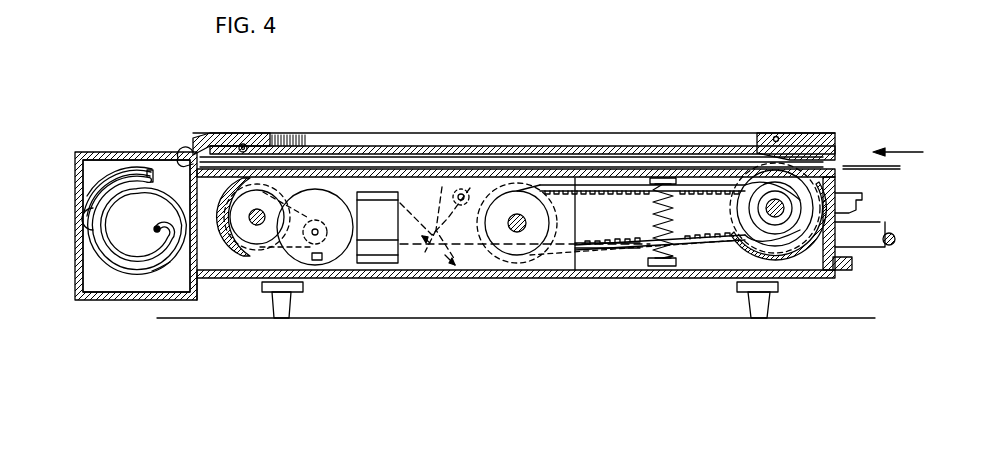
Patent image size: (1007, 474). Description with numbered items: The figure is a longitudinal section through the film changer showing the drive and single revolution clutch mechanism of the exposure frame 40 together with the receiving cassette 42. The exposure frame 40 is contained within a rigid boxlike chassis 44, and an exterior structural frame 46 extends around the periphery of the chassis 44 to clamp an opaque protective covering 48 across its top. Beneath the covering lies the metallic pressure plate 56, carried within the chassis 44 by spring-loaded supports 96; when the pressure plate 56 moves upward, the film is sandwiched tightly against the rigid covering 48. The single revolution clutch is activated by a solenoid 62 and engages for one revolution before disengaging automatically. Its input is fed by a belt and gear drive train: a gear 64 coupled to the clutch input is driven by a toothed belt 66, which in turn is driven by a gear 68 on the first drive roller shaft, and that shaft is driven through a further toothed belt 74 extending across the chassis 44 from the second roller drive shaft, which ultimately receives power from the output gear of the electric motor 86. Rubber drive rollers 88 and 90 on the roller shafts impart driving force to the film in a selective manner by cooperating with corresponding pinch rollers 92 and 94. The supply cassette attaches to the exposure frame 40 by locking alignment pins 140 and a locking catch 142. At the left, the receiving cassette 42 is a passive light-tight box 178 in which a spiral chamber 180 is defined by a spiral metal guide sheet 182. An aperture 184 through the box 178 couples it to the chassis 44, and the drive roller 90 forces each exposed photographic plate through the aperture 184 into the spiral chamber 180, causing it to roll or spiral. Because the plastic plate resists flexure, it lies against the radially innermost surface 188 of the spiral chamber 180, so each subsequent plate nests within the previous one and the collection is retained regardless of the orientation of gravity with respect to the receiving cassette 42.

The exposure frame 40 is at (479, 279).
The receiving cassette 42 is at (139, 305).
The chassis 44 is at (242, 274).
The exterior structural frame 46 is at (787, 133).
The protective covering 48 is at (372, 148).
The pressure plate 56 is at (690, 185).
The solenoid 62 is at (435, 197).
The gear 64 is at (520, 258).
The toothed belt 66 is at (605, 250).
The gear 68 is at (781, 204).
The toothed belt 74 is at (627, 250).
The electric motor 86 is at (318, 262).
The drive roller 88 is at (787, 243).
The drive roller 90 is at (233, 245).
The pinch roller 92 is at (774, 134).
The pinch roller 94 is at (241, 143).
The spring-loaded support 96 is at (673, 248).
The locking alignment pin 140 is at (880, 233).
The locking catch 142 is at (852, 196).
The light-tight box 178 is at (75, 180).
The spiral chamber 180 is at (110, 253).
The spiral guide sheet 182 is at (152, 272).
The aperture 184 is at (183, 162).
The radially innermost surface 188 is at (90, 237).